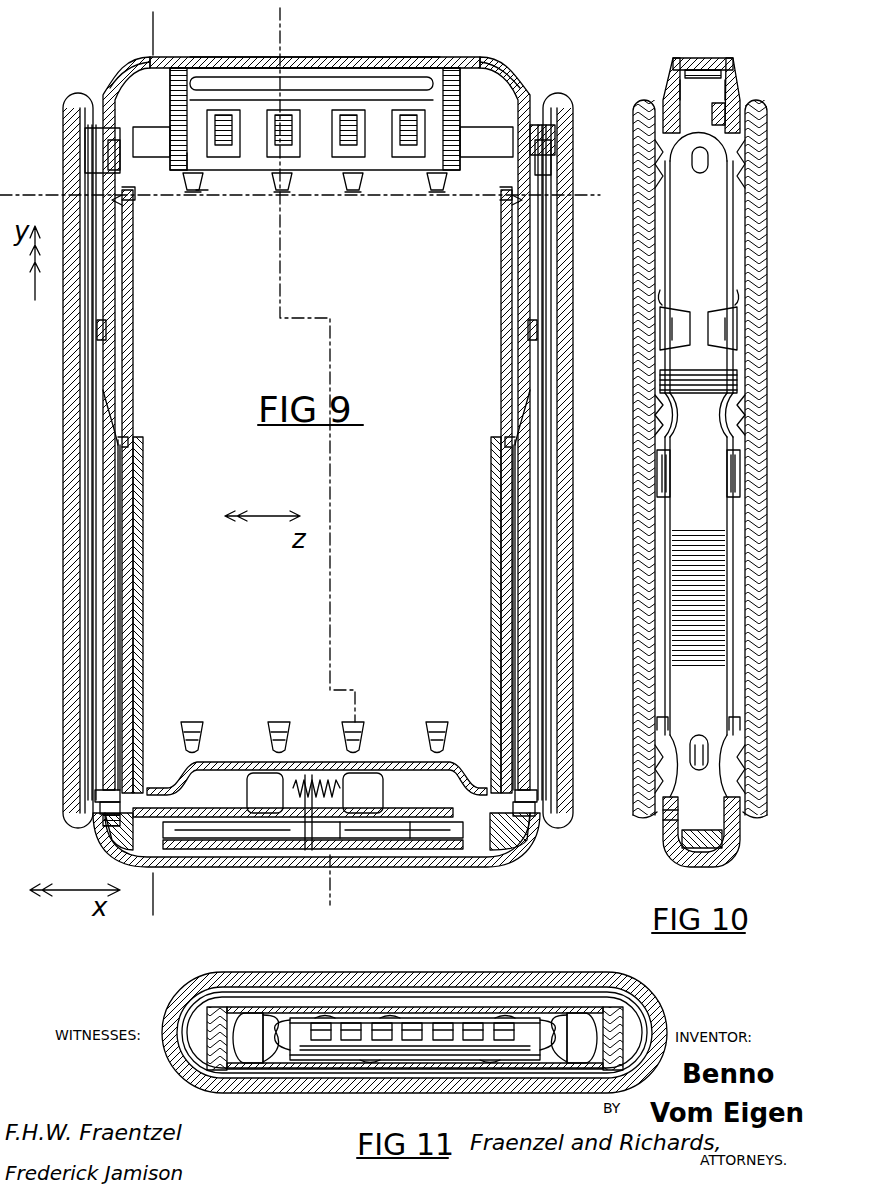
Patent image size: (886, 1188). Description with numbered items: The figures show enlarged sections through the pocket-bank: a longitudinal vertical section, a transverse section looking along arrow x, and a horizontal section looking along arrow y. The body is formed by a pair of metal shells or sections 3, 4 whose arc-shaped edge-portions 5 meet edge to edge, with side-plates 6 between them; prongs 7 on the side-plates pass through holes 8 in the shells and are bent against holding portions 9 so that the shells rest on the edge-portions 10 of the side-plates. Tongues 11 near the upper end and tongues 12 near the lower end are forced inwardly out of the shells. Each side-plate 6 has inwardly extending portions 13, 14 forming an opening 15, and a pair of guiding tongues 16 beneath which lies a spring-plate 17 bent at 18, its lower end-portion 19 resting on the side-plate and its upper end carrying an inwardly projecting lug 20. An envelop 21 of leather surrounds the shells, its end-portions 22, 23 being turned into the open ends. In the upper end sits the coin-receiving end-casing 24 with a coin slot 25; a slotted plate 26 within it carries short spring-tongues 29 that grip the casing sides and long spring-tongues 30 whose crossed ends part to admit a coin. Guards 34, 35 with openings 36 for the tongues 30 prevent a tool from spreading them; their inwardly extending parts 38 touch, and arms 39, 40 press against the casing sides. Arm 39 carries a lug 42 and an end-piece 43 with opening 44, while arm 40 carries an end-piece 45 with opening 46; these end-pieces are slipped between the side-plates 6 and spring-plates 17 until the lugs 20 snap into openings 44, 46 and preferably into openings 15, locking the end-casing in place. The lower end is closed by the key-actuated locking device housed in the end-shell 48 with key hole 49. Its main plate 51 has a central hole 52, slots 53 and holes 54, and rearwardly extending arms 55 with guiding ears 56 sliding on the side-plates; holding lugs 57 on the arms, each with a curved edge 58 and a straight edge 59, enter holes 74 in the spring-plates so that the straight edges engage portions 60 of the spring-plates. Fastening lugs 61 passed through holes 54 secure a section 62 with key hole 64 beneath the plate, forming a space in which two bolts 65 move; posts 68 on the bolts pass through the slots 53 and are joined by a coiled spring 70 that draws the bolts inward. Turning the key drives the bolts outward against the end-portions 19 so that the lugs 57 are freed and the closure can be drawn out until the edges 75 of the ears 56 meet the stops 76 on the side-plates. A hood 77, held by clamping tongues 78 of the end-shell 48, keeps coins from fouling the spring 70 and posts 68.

In FIG. 10, the metal shell or section 3 is at (760, 618).
In FIG. 11, the metal shell or section 3 is at (455, 1060).
In FIG. 9, the metal shell or section 4 is at (374, 506).
In FIG. 10, the metal shell or section 4 is at (650, 608).
In FIG. 11, the metal shell or section 4 is at (455, 1018).
In FIG. 9, the arc-shaped side or edge-portion 5 is at (90, 352).
In FIG. 10, the arc-shaped side or edge-portion 5 is at (637, 262).
In FIG. 11, the arc-shaped side or edge-portion 5 is at (660, 990).
In FIG. 9, the side-plate 6 is at (128, 382).
In FIG. 11, the side-plate 6 is at (213, 1005).
In FIG. 10, the prong 7 is at (656, 150).
In FIG. 10, the hole or opening 8 is at (746, 168).
In FIG. 10, the holding portion 9 is at (720, 420).
In FIG. 9, the edge-portion 10 is at (155, 470).
In FIG. 10, the edge-portion 10 is at (640, 115).
In FIG. 9, the prong-shaped member or tongue 11 is at (437, 196).
In FIG. 9, the prong-shaped member or tongue 12 is at (437, 720).
In FIG. 9, the inwardly extending portion 13 is at (137, 200).
In FIG. 11, the inwardly extending portion 13 is at (418, 1038).
In FIG. 9, the inwardly extending portion 14 is at (323, 119).
In FIG. 9, the opening or hole 15 is at (137, 190).
In FIG. 9, the retaining or guiding tongue 16 is at (97, 330).
In FIG. 10, the retaining or guiding tongue 16 is at (537, 328).
In FIG. 9, the spring-plate 17 is at (110, 300).
In FIG. 10, the spring-plate 17 is at (690, 270).
In FIG. 11, the spring-plate 17 is at (195, 1030).
In FIG. 9, the bend 18 is at (108, 405).
In FIG. 10, the bend 18 is at (737, 385).
In FIG. 9, the lower end-portion 19 is at (517, 713).
In FIG. 10, the lower end-portion 19 is at (735, 845).
In FIG. 9, the inwardly projecting tongue or lug 20 is at (108, 160).
In FIG. 10, the inwardly projecting tongue or lug 20 is at (698, 175).
In FIG. 9, the envelop or covering 21 is at (63, 556).
In FIG. 10, the envelop or covering 21 is at (633, 242).
In FIG. 9, the end-portion of covering 22 is at (78, 105).
In FIG. 10, the end-portion of covering 22 is at (762, 112).
In FIG. 9, the end-portion of covering 23 is at (93, 815).
In FIG. 9, the coin-receiving end-casing or shell 24 is at (205, 60).
In FIG. 10, the coin-receiving end-casing or shell 24 is at (685, 58).
In FIG. 9, the slot or opening 25 is at (322, 78).
In FIG. 9, the plate or member 26 is at (200, 56).
In FIG. 10, the plate or member 26 is at (715, 60).
In FIG. 11, the plate or member 26 is at (283, 997).
In FIG. 11, the short spring-tongue or holding member 29 is at (320, 1016).
In FIG. 9, the longitudinally extending spring-tongue 30 is at (258, 110).
In FIG. 11, the longitudinally extending spring-tongue 30 is at (345, 1023).
In FIG. 11, the guard or plate 34 is at (335, 1060).
In FIG. 11, the guard or plate 35 is at (420, 1018).
In FIG. 9, the opening 36 is at (190, 155).
In FIG. 9, the inwardly extending part or element 38 is at (200, 192).
In FIG. 11, the inwardly extending part or element 38 is at (548, 1025).
In FIG. 9, the arm 39 is at (130, 68).
In FIG. 11, the arm 39 is at (226, 992).
In FIG. 9, the arm 40 is at (500, 85).
In FIG. 11, the arm 40 is at (582, 1010).
In FIG. 10, the holding tongue or lug 42 is at (728, 108).
In FIG. 9, the downwardly extending element or member 43 is at (526, 110).
In FIG. 11, the downwardly extending element or member 43 is at (640, 1000).
In FIG. 9, the opening 44 is at (555, 135).
In FIG. 9, the downwardly extending member 45 is at (108, 85).
In FIG. 10, the downwardly extending member 45 is at (735, 90).
In FIG. 11, the downwardly extending member 45 is at (200, 1000).
In FIG. 9, the opening 46 is at (85, 145).
In FIG. 10, the end-shell or casing 48 is at (728, 865).
In FIG. 9, the key-receiving hole or opening 49 is at (340, 858).
In FIG. 9, the main plate or body 51 is at (410, 858).
In FIG. 9, the centrally disposed hole 52 is at (320, 785).
In FIG. 9, the slot or elongated opening 53 is at (265, 795).
In FIG. 9, the opening or hole 54 is at (220, 855).
In FIG. 9, the rearwardly extending arm 55 is at (517, 560).
In FIG. 9, the guiding-member or ear 56 is at (136, 440).
In FIG. 10, the guiding-member or ear 56 is at (660, 480).
In FIG. 9, the projection or holding lug 57 is at (100, 805).
In FIG. 10, the projection or holding lug 57 is at (705, 770).
In FIG. 9, the curved edge-portion 58 is at (110, 826).
In FIG. 10, the curved edge-portion 58 is at (700, 800).
In FIG. 9, the straight-edge 59 is at (133, 850).
In FIG. 9, the portion of spring-plate 60 is at (115, 830).
In FIG. 9, the fastening lug 61 is at (180, 810).
In FIG. 10, the fastening lug 61 is at (698, 862).
In FIG. 9, the section or element 62 is at (190, 860).
In FIG. 10, the section or element 62 is at (672, 850).
In FIG. 9, the key-receiving opening or hole 64 is at (290, 858).
In FIG. 9, the bolt 65 is at (380, 858).
In FIG. 11, the bolt 65 is at (240, 1008).
In FIG. 9, the post or lug 68 is at (280, 725).
In FIG. 9, the coiled spring 70 is at (305, 780).
In FIG. 9, the hole or opening 74 is at (120, 795).
In FIG. 10, the hole or opening 74 is at (665, 820).
In FIG. 9, the edge 75 is at (143, 470).
In FIG. 10, the stop 76 is at (728, 722).
In FIG. 9, the hood, shell or casing 77 is at (445, 740).
In FIG. 9, the clamping lug or tongue 78 is at (160, 785).